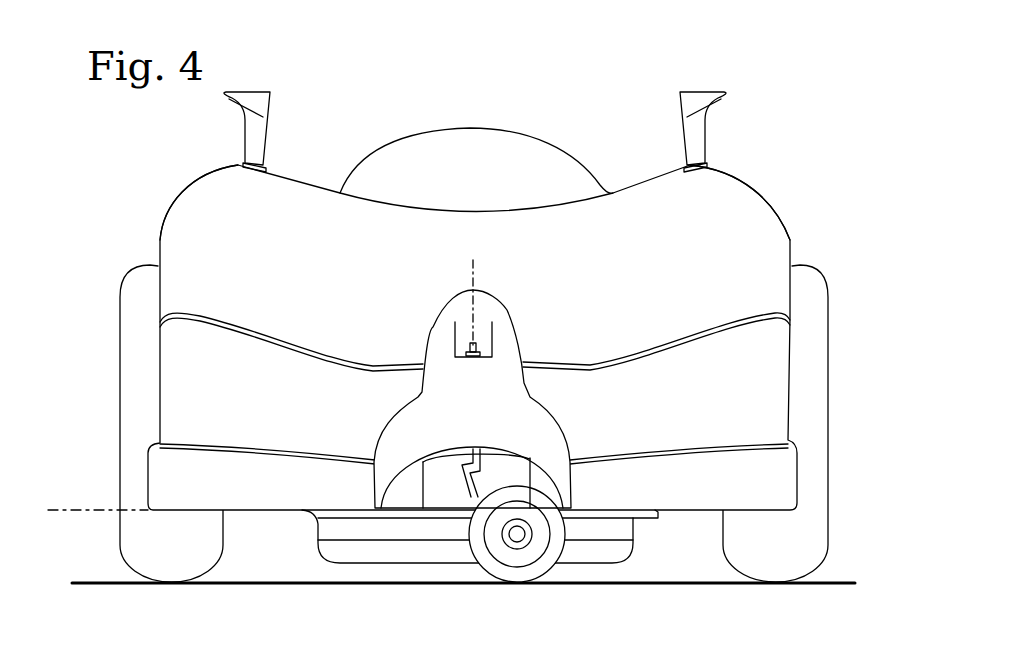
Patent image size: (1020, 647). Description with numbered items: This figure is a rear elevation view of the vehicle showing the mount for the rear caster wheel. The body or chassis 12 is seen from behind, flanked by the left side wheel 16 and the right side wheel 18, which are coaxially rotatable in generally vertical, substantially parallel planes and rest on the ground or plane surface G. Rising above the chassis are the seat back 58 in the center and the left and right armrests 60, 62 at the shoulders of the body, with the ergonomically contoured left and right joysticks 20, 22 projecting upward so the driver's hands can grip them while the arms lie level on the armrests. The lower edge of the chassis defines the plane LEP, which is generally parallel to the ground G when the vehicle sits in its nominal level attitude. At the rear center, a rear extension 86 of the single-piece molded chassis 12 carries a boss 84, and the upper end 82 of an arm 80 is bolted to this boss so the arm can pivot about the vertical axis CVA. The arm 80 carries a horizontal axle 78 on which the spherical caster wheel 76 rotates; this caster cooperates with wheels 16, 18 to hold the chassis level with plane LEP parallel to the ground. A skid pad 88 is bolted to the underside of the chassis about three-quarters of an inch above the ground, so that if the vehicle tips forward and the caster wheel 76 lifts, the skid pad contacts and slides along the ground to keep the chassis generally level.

The body or chassis 12 is at (170, 240).
The left side wheel 16 is at (132, 392).
The right side wheel 18 is at (808, 362).
The left joystick 20 is at (252, 92).
The right joystick 22 is at (702, 93).
The seat back 58 is at (410, 147).
The left armrest 60 is at (223, 177).
The right armrest 62 is at (718, 178).
The spherical caster wheel 76 is at (503, 573).
The horizontal axle 78 is at (517, 542).
The arm 80 is at (457, 465).
The upper end of arm 82 is at (475, 338).
The boss 84 is at (458, 350).
The rear extension 86 is at (497, 375).
The skid pad 88 is at (618, 528).
The ground or plane surface G is at (318, 582).
The lower edge plane LEP is at (90, 508).
The vertical axis CVA is at (472, 263).